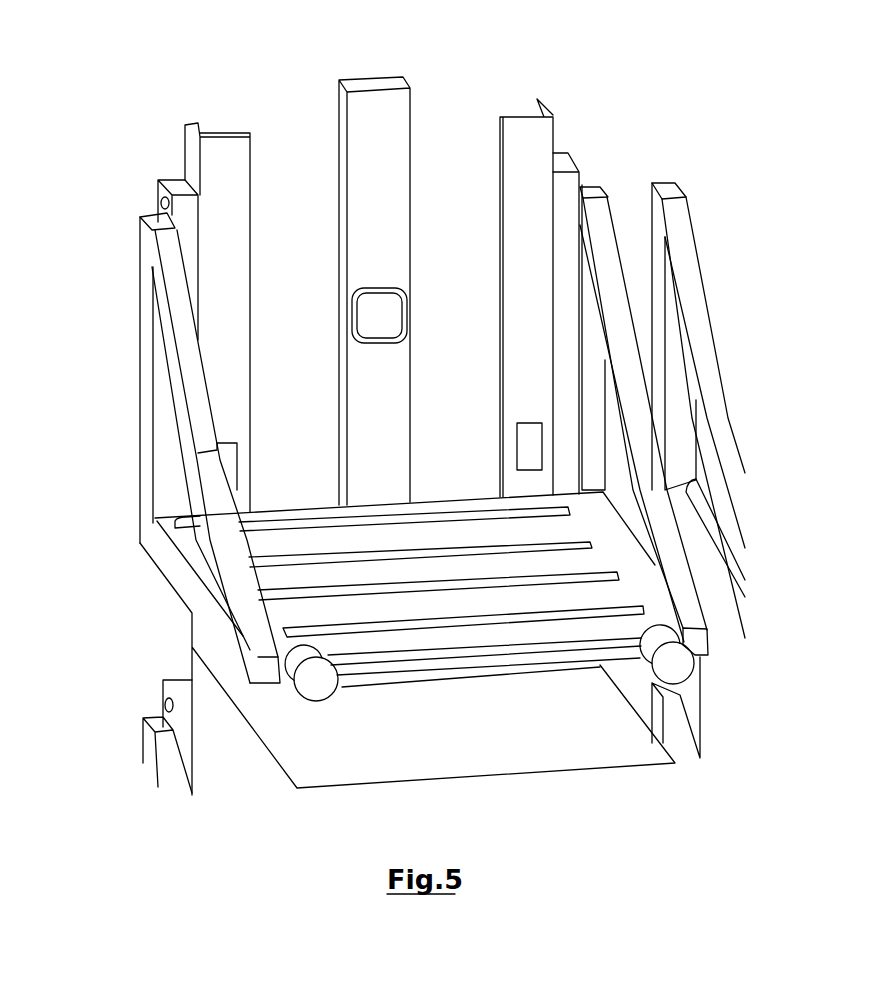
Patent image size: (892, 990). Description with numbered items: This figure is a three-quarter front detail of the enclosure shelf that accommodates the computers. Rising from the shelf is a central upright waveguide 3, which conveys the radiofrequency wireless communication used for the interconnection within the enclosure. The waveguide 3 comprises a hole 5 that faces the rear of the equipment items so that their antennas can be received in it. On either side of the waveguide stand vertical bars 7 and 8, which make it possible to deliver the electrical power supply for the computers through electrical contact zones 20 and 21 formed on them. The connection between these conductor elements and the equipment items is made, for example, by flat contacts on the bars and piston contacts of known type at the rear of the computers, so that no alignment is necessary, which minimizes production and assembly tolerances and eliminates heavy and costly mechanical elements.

The waveguide 3 is at (363, 98).
The hole 5 is at (387, 308).
The vertical bar 7 is at (192, 152).
The vertical bar 8 is at (518, 132).
The electrical contact zone 20 is at (228, 455).
The electrical contact zone 21 is at (527, 445).